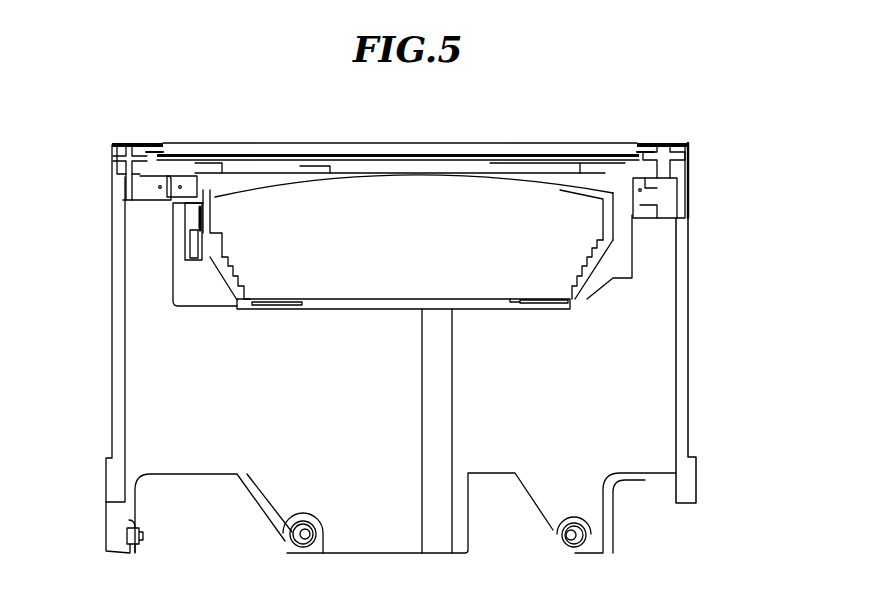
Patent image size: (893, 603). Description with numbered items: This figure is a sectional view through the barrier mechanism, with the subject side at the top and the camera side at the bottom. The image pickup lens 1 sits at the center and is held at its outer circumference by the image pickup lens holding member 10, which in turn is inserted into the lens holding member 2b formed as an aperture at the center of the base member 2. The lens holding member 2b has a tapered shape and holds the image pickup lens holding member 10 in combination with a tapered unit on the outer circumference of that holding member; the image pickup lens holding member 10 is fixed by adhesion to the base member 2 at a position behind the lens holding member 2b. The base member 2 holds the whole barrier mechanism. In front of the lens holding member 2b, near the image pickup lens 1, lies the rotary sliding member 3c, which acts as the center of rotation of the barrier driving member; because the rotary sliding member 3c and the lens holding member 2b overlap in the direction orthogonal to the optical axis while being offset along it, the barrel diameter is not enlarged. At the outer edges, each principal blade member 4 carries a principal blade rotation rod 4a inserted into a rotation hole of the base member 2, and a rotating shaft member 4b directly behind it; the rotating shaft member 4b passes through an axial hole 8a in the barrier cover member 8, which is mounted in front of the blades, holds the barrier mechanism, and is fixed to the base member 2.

The image pickup lens 1 is at (458, 255).
The base member 2 is at (683, 333).
The lens holding member 2b is at (200, 266).
The rotary sliding member 3c is at (185, 207).
The principal blade member 4 is at (113, 158).
The principal blade rotation rod 4a is at (135, 197).
The rotating shaft member 4b is at (136, 147).
The barrier cover member 8 is at (217, 148).
The axial hole 8a is at (152, 145).
The image pickup lens holding member 10 is at (222, 258).